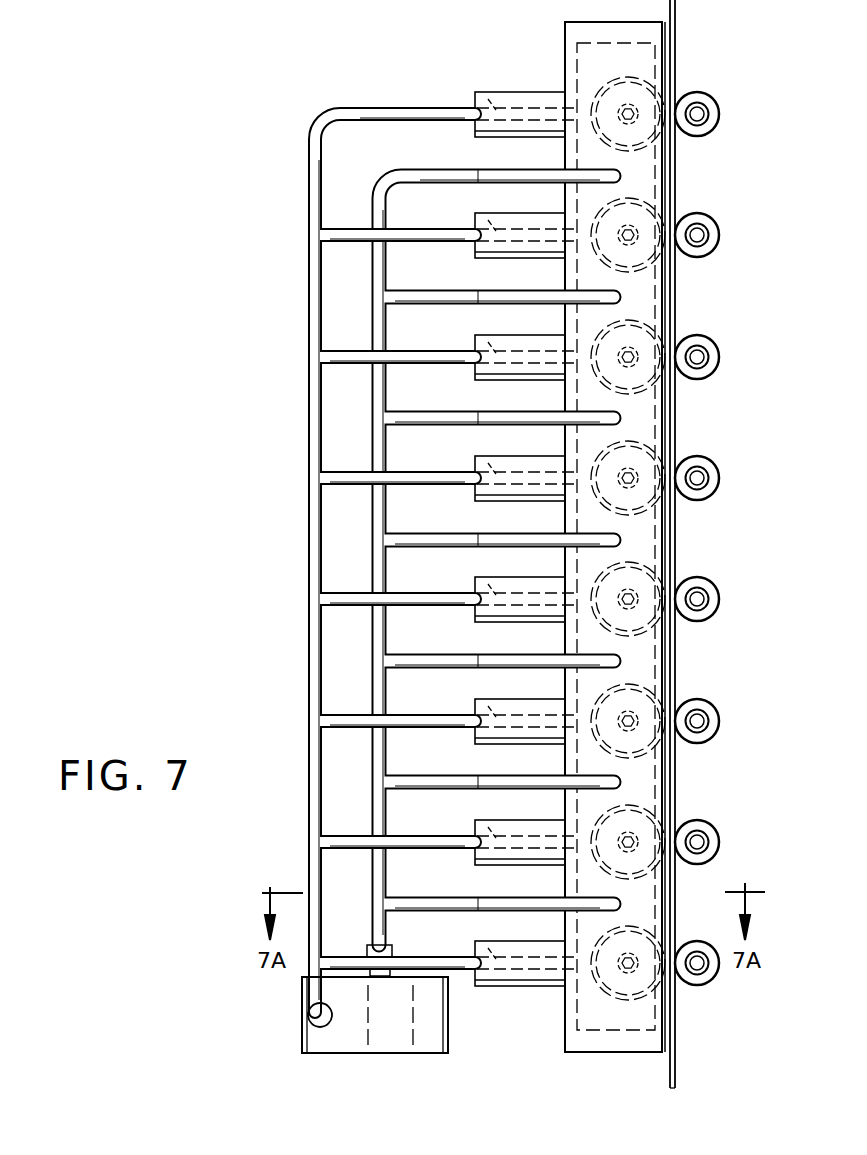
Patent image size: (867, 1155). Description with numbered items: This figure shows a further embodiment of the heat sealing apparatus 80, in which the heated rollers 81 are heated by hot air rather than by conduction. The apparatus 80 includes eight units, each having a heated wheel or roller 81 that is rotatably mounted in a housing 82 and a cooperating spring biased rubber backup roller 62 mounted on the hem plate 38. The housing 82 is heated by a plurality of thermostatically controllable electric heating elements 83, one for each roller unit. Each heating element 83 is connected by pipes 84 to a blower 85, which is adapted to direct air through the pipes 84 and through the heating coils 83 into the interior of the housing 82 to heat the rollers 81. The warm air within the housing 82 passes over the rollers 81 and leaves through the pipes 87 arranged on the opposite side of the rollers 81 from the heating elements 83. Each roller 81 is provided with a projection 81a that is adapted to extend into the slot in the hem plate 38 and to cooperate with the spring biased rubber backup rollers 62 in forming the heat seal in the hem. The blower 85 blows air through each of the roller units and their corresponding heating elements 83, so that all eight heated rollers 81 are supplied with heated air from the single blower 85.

The hem plate 38 is at (677, 50).
The spring biased rubber backup rollers 62 is at (697, 92).
The heat sealing apparatus 80 is at (494, 64).
The heated rollers 81 is at (612, 92).
The projection 81a is at (648, 85).
The housing 82 is at (596, 537).
The thermostatically controllable electric heating elements 83 is at (474, 92).
The pipes 84 is at (320, 355).
The blower 85 is at (440, 1012).
The pipes 87 is at (542, 178).